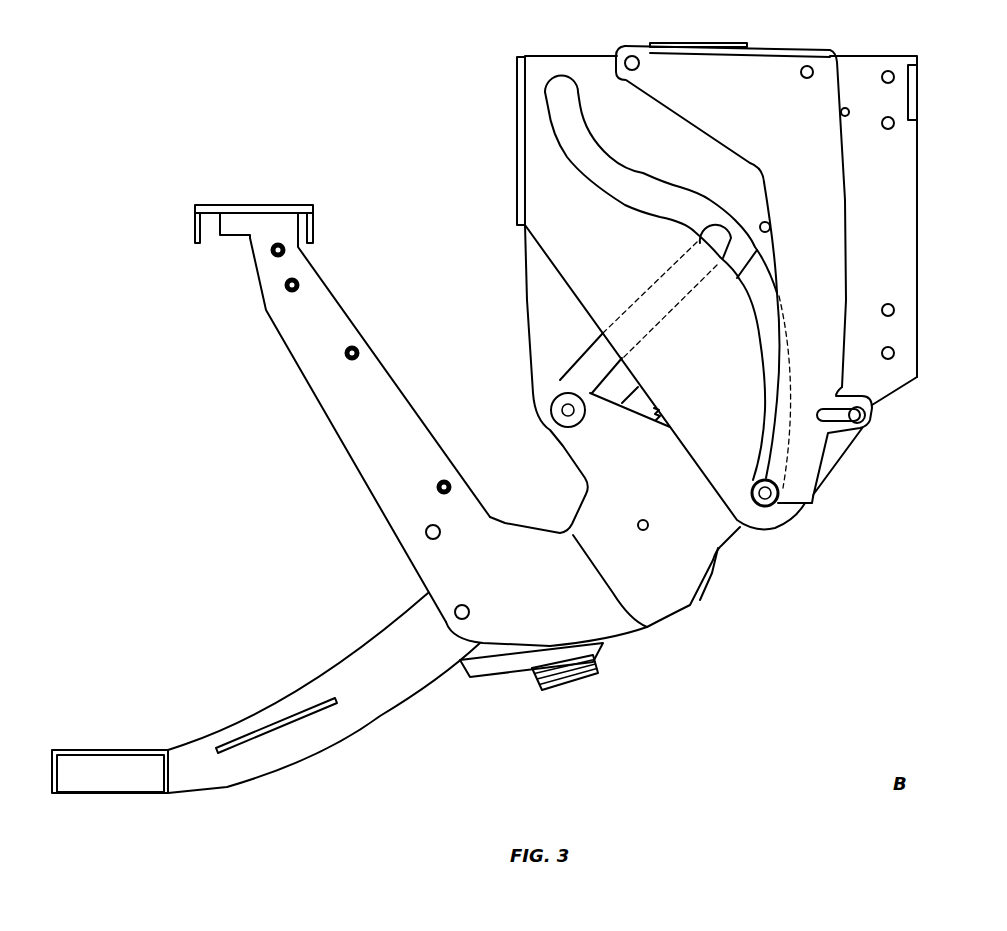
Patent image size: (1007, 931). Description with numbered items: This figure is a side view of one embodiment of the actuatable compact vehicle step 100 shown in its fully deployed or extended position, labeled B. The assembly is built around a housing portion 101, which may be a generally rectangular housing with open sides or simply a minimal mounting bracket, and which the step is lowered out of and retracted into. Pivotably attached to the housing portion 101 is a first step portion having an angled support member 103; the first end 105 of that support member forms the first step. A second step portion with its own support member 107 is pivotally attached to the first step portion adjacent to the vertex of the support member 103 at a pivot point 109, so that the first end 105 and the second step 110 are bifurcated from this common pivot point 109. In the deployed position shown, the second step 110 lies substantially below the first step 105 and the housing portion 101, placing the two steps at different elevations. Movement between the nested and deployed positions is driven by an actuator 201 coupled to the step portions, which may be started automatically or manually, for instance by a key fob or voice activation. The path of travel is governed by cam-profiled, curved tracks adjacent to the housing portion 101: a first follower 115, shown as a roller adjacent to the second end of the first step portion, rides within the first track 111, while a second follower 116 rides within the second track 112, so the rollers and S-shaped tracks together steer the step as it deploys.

The actuatable compact vehicle step 100 is at (413, 102).
The housing portion 101 is at (897, 138).
The support member 103 is at (353, 423).
The first end 105 is at (262, 205).
The support member 107 is at (383, 693).
The pivot point 109 is at (464, 618).
The second step 110 is at (112, 750).
The first track 111 is at (583, 370).
The second track 112 is at (560, 110).
The first follower 115 is at (562, 410).
The second follower 116 is at (777, 508).
The actuator 201 is at (533, 652).